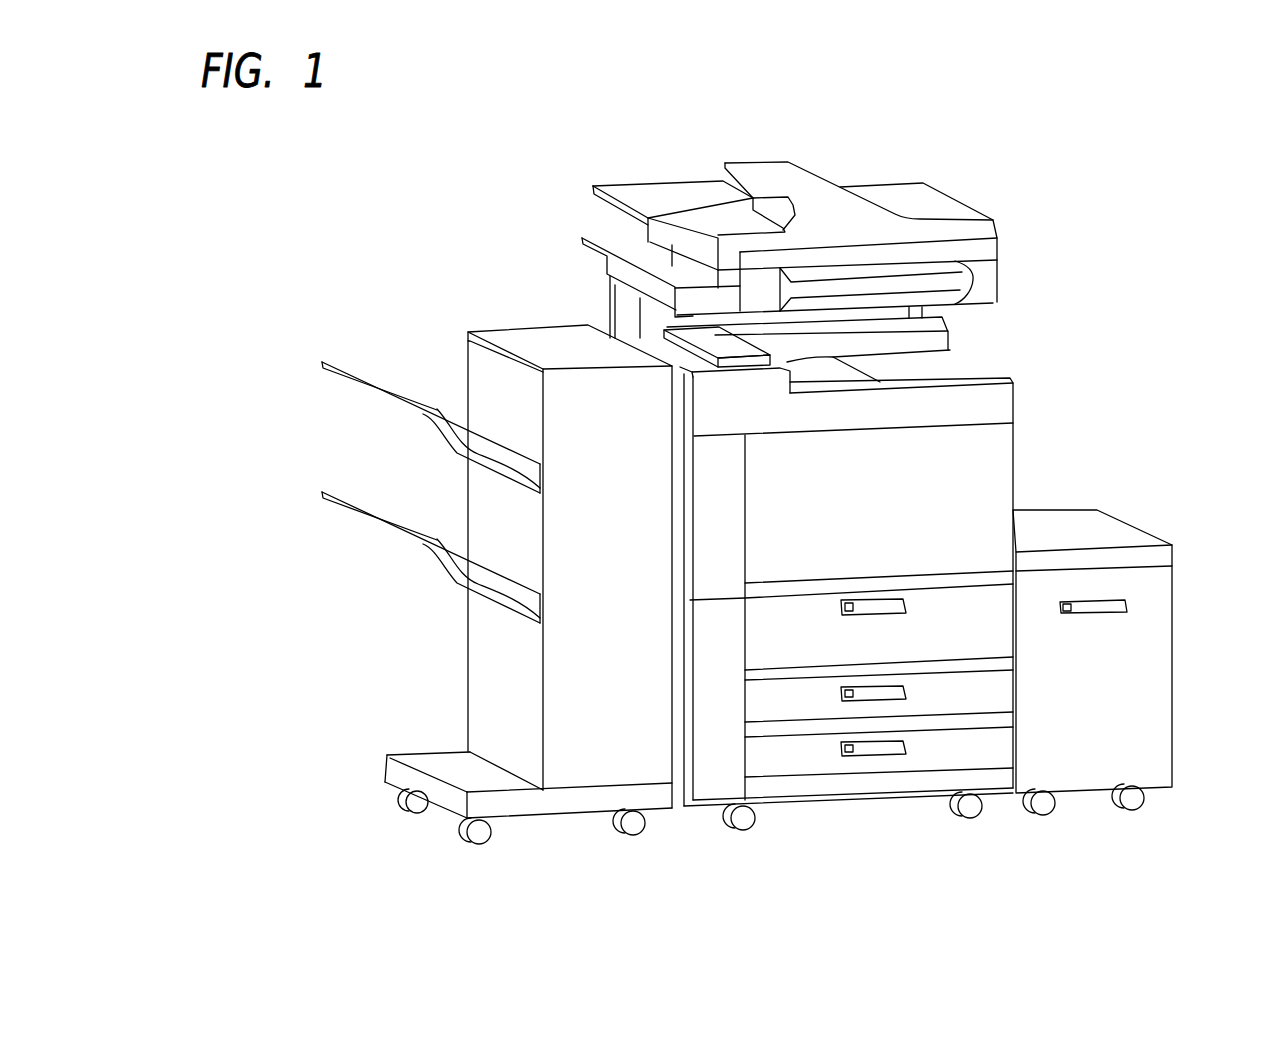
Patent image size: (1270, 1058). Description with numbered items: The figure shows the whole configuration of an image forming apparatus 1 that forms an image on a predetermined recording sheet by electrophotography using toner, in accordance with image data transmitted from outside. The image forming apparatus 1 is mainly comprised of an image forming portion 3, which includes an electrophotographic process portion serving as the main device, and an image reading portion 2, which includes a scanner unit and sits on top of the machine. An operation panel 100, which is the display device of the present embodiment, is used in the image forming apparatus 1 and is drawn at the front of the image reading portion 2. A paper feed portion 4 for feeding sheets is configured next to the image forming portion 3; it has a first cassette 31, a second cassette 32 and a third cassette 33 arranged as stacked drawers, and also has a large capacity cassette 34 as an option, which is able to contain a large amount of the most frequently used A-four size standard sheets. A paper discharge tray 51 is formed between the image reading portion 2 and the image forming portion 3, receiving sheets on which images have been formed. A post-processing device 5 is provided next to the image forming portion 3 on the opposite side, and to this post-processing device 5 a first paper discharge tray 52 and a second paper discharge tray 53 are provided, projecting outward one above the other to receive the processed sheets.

The image forming apparatus 1 is at (1028, 173).
The image reading portion 2 is at (870, 173).
The operation panel 100 is at (870, 270).
The image forming portion 3 is at (1013, 459).
The paper feed portion 4 is at (1125, 518).
The post-processing device 5 is at (538, 311).
The first cassette 31 is at (997, 643).
The second cassette 32 is at (997, 688).
The third cassette 33 is at (997, 745).
The large capacity cassette 34 is at (1155, 690).
The paper discharge tray 51 is at (953, 360).
The first paper discharge tray 52 is at (392, 388).
The second paper discharge tray 53 is at (370, 507).